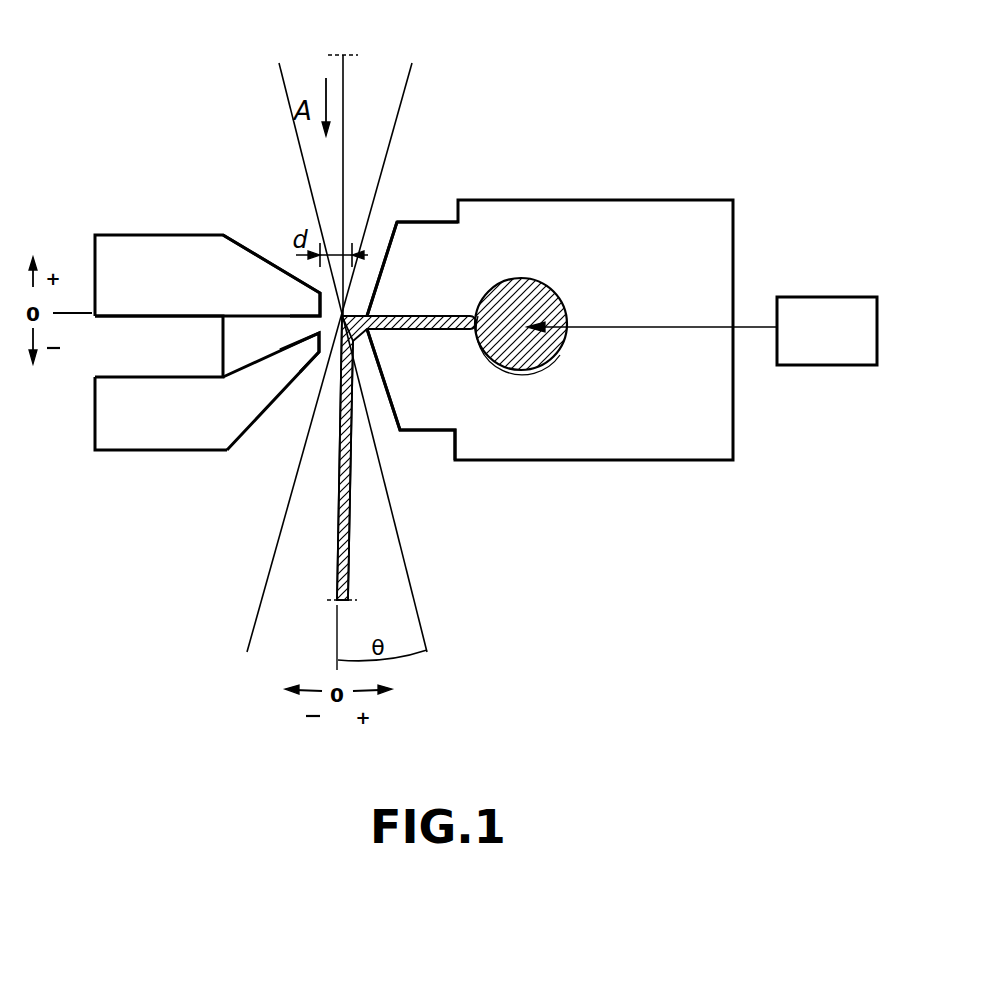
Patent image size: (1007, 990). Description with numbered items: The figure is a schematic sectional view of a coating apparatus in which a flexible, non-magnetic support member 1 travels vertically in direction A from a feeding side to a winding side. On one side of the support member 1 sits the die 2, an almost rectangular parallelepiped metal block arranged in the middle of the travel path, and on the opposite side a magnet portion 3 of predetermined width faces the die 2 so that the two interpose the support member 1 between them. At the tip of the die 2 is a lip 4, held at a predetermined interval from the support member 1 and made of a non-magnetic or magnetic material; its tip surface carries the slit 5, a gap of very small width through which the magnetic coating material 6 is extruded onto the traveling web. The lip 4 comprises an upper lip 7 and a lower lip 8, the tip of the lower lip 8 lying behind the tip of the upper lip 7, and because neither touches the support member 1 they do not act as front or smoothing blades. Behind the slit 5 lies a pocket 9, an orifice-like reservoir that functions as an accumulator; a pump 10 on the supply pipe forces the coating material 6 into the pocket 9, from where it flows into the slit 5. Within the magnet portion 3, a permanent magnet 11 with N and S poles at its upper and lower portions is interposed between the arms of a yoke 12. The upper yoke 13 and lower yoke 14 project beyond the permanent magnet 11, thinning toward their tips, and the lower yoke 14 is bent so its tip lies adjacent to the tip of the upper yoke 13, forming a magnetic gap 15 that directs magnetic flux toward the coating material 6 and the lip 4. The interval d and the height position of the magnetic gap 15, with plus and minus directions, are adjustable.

The support member 1 is at (350, 91).
The die 2 is at (618, 178).
The magnet portion 3 is at (152, 203).
The lip 4 is at (418, 343).
The slit 5 is at (469, 332).
The coating material 6 is at (528, 279).
The upper lip 7 is at (389, 247).
The lower lip 8 is at (423, 420).
The pocket 9 is at (531, 368).
The pump 10 is at (827, 297).
The permanent magnet 11 is at (95, 357).
The yoke 12 is at (185, 243).
The upper yoke 13 is at (253, 252).
The lower yoke 14 is at (232, 440).
The magnetic gap 15 is at (298, 343).